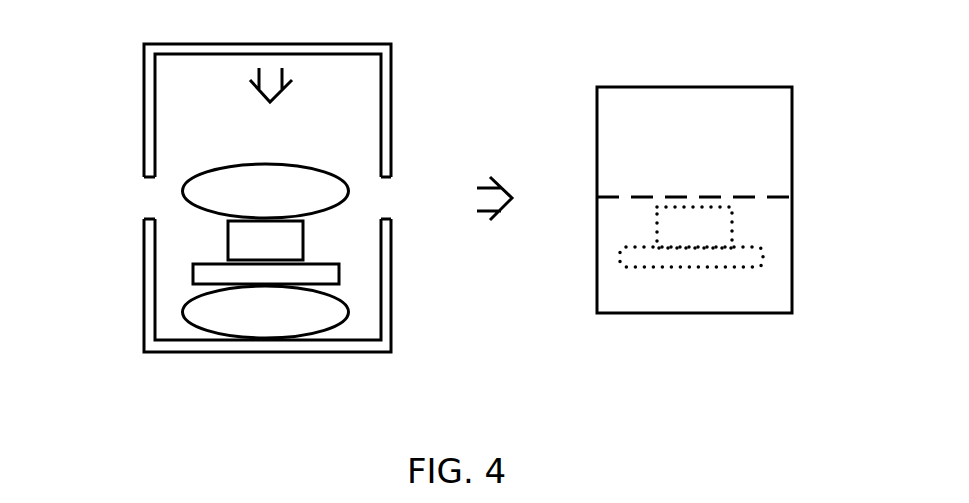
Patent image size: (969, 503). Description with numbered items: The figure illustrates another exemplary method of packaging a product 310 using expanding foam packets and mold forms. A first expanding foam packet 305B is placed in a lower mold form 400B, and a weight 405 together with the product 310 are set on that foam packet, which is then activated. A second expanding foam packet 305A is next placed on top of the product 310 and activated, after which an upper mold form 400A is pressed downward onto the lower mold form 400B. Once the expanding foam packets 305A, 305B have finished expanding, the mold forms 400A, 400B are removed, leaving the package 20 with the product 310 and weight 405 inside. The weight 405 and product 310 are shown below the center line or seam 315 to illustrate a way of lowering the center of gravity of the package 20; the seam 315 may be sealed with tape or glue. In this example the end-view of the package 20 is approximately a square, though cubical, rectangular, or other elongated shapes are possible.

The upper mold form 400A is at (144, 69).
The lower mold form 400B is at (158, 355).
The second expanding foam packet 305A is at (292, 203).
The first expanding foam packet 305B is at (292, 323).
The product 310 is at (285, 253).
The weight 405 is at (193, 275).
The package 20 is at (645, 82).
The seam 315 is at (792, 197).